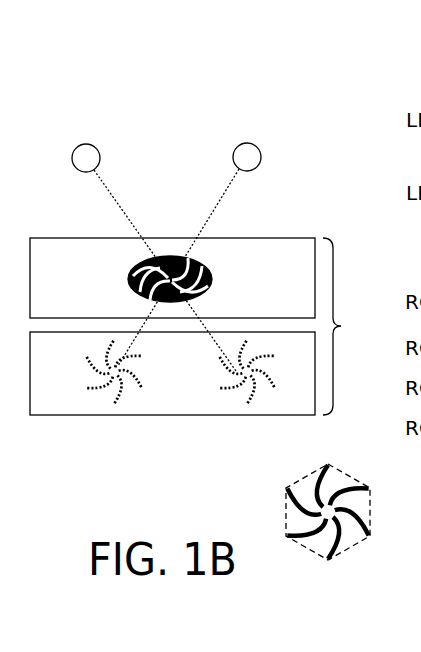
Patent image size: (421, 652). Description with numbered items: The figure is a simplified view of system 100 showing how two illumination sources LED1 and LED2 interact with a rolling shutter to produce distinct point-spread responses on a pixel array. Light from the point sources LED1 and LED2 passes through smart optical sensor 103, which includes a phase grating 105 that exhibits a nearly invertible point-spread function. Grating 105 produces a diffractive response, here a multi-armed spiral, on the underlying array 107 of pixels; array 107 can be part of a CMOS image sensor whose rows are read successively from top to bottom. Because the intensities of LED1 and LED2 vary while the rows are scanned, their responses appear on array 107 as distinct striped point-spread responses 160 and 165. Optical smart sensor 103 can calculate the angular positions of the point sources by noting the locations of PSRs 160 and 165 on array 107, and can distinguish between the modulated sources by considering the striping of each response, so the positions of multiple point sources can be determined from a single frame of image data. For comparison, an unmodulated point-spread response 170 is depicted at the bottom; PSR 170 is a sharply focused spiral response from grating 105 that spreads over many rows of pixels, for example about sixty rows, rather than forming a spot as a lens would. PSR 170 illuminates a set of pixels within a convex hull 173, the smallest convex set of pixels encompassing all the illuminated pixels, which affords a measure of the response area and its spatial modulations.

The system 100 is at (111, 57).
The illumination source LED1 is at (91, 144).
The illumination source LED2 is at (249, 143).
The smart optical sensor 103 is at (349, 326).
The phase grating 105 is at (140, 264).
The array 107 is at (190, 406).
The point-spread response 160 is at (221, 380).
The point-spread response 165 is at (96, 386).
The unmodulated point-spread response 170 is at (312, 482).
The convex hull 173 is at (307, 548).